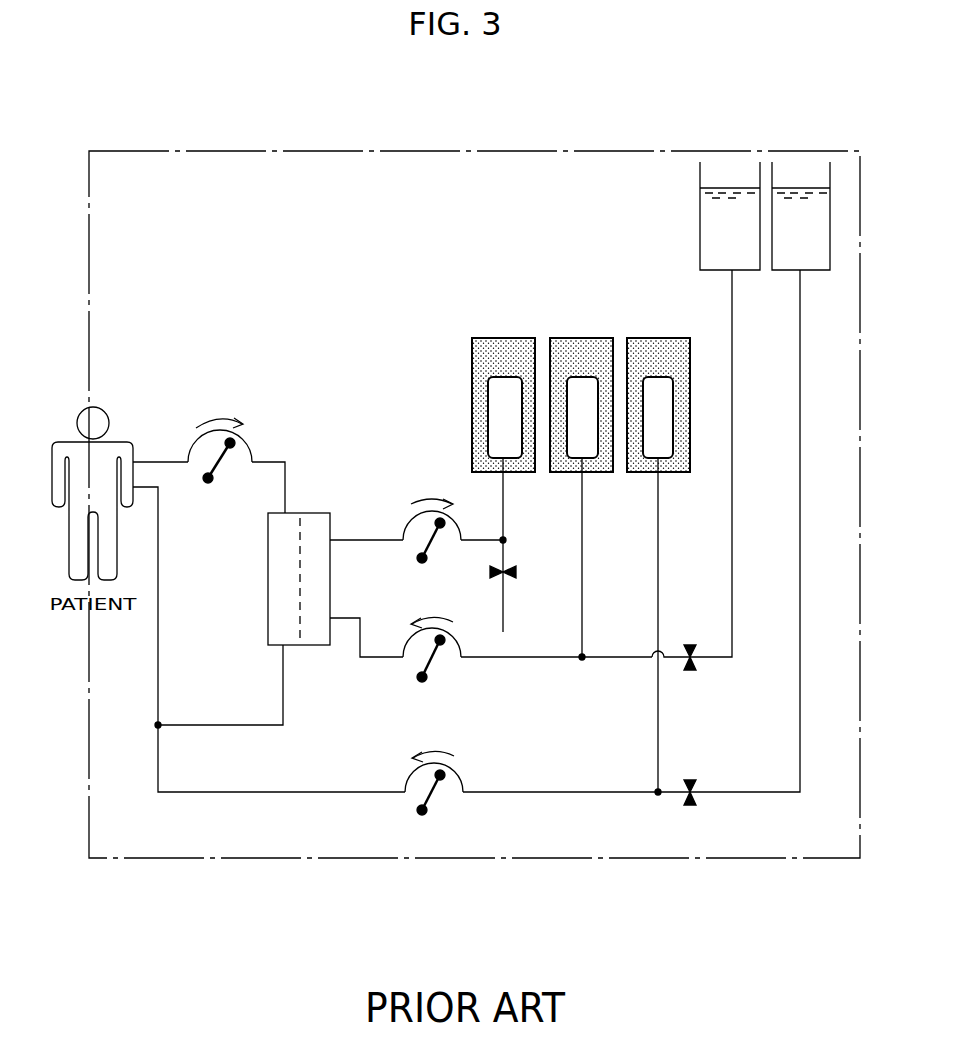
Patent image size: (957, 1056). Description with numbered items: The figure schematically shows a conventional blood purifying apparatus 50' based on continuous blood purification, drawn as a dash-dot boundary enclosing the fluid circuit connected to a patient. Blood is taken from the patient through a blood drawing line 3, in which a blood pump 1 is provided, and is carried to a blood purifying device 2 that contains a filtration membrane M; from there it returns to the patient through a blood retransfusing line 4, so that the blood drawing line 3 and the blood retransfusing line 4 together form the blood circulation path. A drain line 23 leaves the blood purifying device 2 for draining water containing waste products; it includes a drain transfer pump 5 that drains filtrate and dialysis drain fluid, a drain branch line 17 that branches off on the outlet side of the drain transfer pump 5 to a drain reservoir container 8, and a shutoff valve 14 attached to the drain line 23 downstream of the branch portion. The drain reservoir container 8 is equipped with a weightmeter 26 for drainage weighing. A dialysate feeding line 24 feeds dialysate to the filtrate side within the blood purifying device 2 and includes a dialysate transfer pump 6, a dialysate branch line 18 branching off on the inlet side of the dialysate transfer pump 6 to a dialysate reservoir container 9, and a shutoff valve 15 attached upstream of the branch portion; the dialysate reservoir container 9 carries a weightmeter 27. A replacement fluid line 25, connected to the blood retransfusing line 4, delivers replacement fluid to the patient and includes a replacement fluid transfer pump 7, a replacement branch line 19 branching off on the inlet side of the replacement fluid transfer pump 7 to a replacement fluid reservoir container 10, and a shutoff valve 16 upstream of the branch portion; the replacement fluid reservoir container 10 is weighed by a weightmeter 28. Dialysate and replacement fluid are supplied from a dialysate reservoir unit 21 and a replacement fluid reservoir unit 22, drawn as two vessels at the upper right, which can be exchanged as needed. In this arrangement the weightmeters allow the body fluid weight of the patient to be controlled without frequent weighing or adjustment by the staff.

The blood pump 1 is at (192, 452).
The blood purifying device 2 is at (268, 575).
The blood drawing line 3 is at (285, 475).
The blood retransfusing line 4 is at (218, 725).
The drain transfer pump 5 is at (428, 503).
The dialysate transfer pump 6 is at (457, 660).
The replacement fluid transfer pump 7 is at (410, 776).
The drain reservoir container 8 is at (515, 455).
The dialysate reservoir container 9 is at (594, 455).
The replacement fluid reservoir container 10 is at (670, 455).
The shutoff valve 14 is at (517, 572).
The shutoff valve 15 is at (690, 671).
The shutoff valve 16 is at (690, 806).
The drain branch line 17 is at (506, 513).
The dialysate branch line 18 is at (584, 538).
The replacement branch line 19 is at (660, 555).
The dialysate reservoir unit 21 is at (700, 220).
The replacement fluid reservoir unit 22 is at (802, 270).
The drain line 23 is at (360, 540).
The dialysate feeding line 24 is at (364, 632).
The replacement fluid line 25 is at (158, 794).
The weightmeter 26 is at (498, 338).
The weightmeter 27 is at (580, 338).
The weightmeter 28 is at (655, 338).
The filtration membrane M is at (300, 642).
The blood purifying apparatus 50' is at (474, 538).